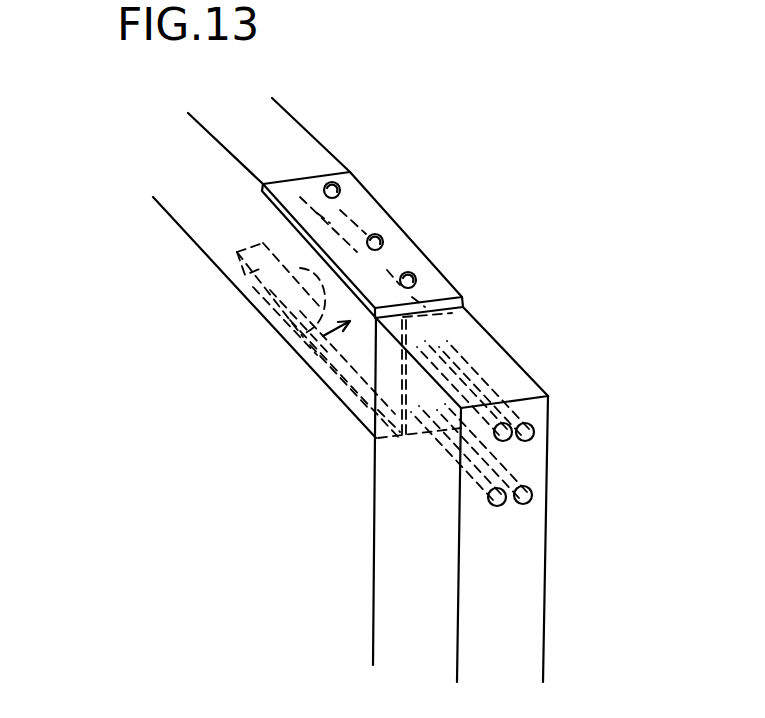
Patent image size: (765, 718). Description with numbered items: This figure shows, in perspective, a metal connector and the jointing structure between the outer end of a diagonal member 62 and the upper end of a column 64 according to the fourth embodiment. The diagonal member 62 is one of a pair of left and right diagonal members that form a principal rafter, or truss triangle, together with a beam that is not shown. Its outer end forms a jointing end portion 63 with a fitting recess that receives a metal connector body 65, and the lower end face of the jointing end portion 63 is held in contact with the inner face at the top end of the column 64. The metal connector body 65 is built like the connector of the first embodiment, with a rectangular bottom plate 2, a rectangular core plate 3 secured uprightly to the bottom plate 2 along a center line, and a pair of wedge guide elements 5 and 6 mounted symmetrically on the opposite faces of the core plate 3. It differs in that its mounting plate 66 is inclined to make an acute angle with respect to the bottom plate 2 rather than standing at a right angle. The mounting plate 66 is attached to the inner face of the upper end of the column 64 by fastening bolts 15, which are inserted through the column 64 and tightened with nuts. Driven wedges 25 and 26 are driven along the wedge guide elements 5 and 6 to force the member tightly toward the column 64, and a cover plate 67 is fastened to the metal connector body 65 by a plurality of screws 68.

The bottom plate 2 is at (328, 387).
The core plate 3 is at (300, 210).
The wedge guide element 5 is at (370, 190).
The wedge guide element 6 is at (250, 302).
The fastening bolts 15 is at (532, 492).
The driven wedge 25 is at (380, 207).
The driven wedge 26 is at (273, 326).
The diagonal member 62 is at (173, 223).
The jointing end portion 63 is at (218, 266).
The column 64 is at (519, 555).
The metal connector body 65 is at (303, 359).
The mounting plate 66 is at (357, 417).
The cover plate 67 is at (432, 278).
The screws 68 is at (386, 240).